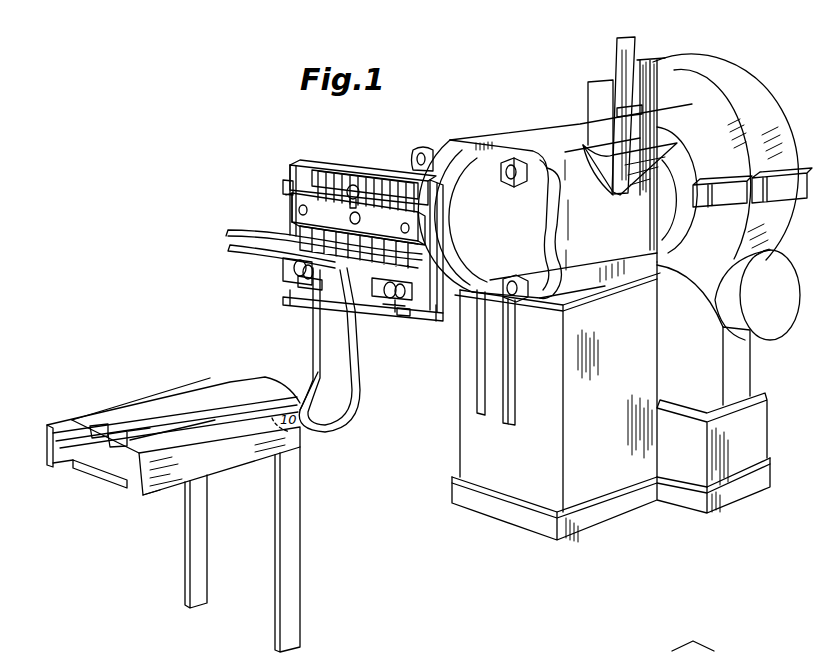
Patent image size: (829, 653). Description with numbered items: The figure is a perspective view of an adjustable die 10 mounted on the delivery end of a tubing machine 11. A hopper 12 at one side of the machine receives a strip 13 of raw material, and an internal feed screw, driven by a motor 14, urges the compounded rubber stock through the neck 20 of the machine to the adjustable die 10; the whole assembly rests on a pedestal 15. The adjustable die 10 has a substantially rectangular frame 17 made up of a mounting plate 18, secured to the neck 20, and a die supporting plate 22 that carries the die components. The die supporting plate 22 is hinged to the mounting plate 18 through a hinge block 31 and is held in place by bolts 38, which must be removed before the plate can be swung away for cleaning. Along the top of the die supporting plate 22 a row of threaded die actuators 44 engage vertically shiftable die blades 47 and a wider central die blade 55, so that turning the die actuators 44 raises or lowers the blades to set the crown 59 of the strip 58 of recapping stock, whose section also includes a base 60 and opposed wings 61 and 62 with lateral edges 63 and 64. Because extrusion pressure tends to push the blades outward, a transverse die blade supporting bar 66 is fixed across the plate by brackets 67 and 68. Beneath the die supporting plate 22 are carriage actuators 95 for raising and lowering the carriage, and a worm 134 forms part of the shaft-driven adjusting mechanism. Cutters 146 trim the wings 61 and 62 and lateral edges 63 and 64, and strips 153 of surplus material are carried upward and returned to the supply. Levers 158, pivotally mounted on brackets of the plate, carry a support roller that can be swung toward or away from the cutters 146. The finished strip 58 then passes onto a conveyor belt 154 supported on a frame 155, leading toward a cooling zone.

The adjustable die 10 is at (343, 222).
The tubing machine 11 is at (519, 125).
The hopper 12 is at (636, 205).
The strip of raw material 13 is at (636, 40).
The motor 14 is at (713, 73).
The pedestal 15 is at (468, 437).
The frame 17 is at (289, 161).
The mounting plate 18 is at (451, 141).
The neck 20 is at (457, 307).
The die supporting plate 22 is at (303, 170).
The hinge block 31 is at (283, 186).
The bolts 38 is at (402, 229).
The die actuators 44 is at (397, 173).
The die blades 47 is at (284, 270).
The central die blade 55 is at (318, 274).
The strip of recapping stock 58 is at (261, 379).
The crown 59 is at (227, 383).
The base 60 is at (112, 433).
The wing 61 is at (98, 424).
The wing 62 is at (193, 418).
The lateral edge 63 is at (83, 422).
The lateral edge 64 is at (163, 424).
The die blade supporting bar 66 is at (293, 216).
The bracket 67 is at (292, 205).
The bracket 68 is at (425, 149).
The carriage actuators 95 is at (407, 317).
The worm 134 is at (378, 292).
The cutters 146 is at (413, 242).
The strips of surplus material 153 is at (263, 256).
The conveyor belt 154 is at (123, 478).
The frame 155 is at (157, 489).
The lever 158 is at (427, 252).